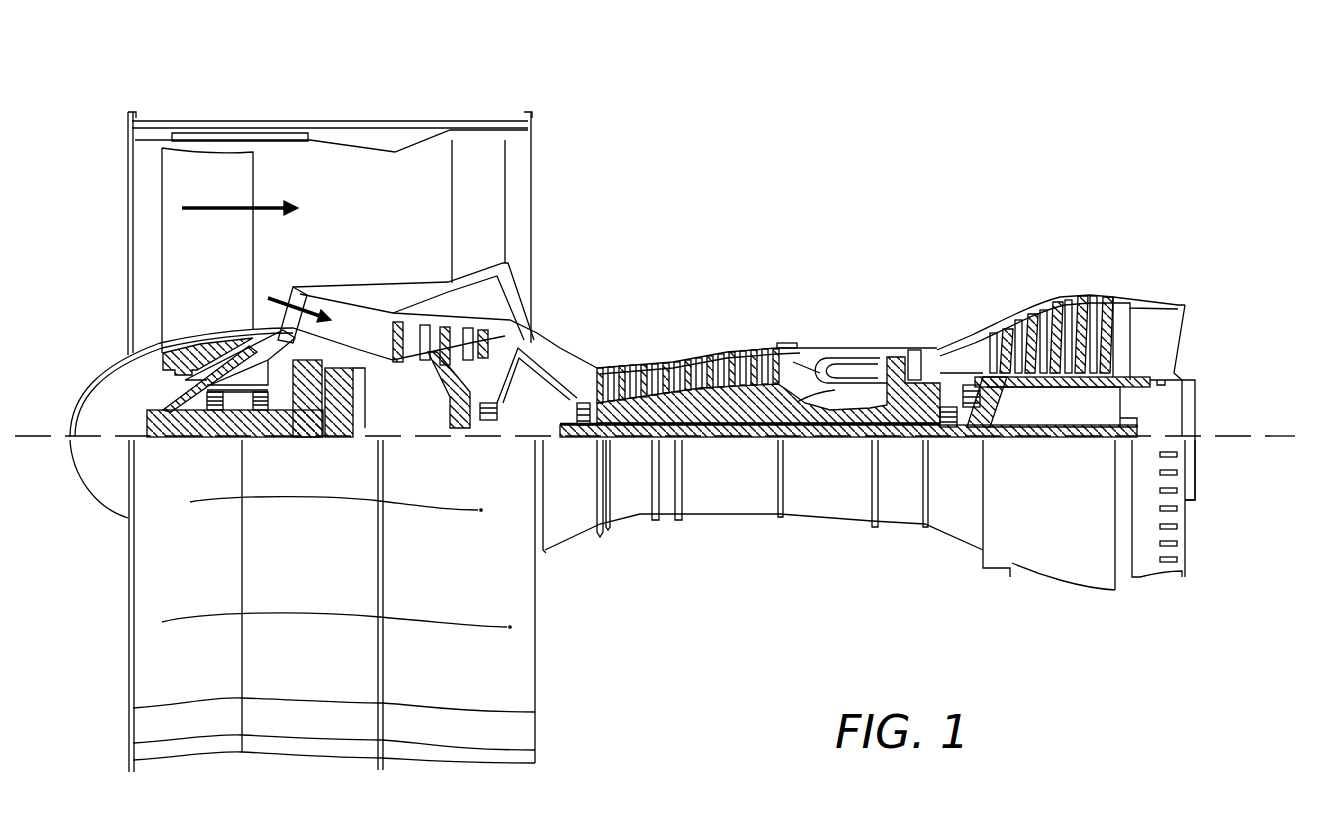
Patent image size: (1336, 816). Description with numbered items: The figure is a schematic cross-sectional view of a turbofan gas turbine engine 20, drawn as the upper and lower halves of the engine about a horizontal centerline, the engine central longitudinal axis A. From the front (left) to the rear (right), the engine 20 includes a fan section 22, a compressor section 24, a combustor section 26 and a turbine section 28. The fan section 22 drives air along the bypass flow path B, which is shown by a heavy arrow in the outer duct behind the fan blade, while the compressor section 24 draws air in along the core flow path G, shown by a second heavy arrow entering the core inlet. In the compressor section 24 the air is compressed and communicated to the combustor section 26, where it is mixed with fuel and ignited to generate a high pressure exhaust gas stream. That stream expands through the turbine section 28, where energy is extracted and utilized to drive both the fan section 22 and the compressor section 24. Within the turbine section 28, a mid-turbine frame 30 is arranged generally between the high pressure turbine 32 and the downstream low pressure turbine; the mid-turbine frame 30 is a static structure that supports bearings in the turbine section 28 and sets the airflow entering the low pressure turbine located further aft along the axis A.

The gas turbine engine 20 is at (901, 132).
The fan section 22 is at (255, 107).
The compressor section 24 is at (588, 333).
The combustor section 26 is at (835, 318).
The turbine section 28 is at (1021, 254).
The mid-turbine frame 30 is at (976, 320).
The high pressure turbine 32 is at (913, 333).
The engine central longitudinal axis A is at (1287, 436).
The bypass flow path B is at (217, 205).
The core flow path G is at (279, 297).